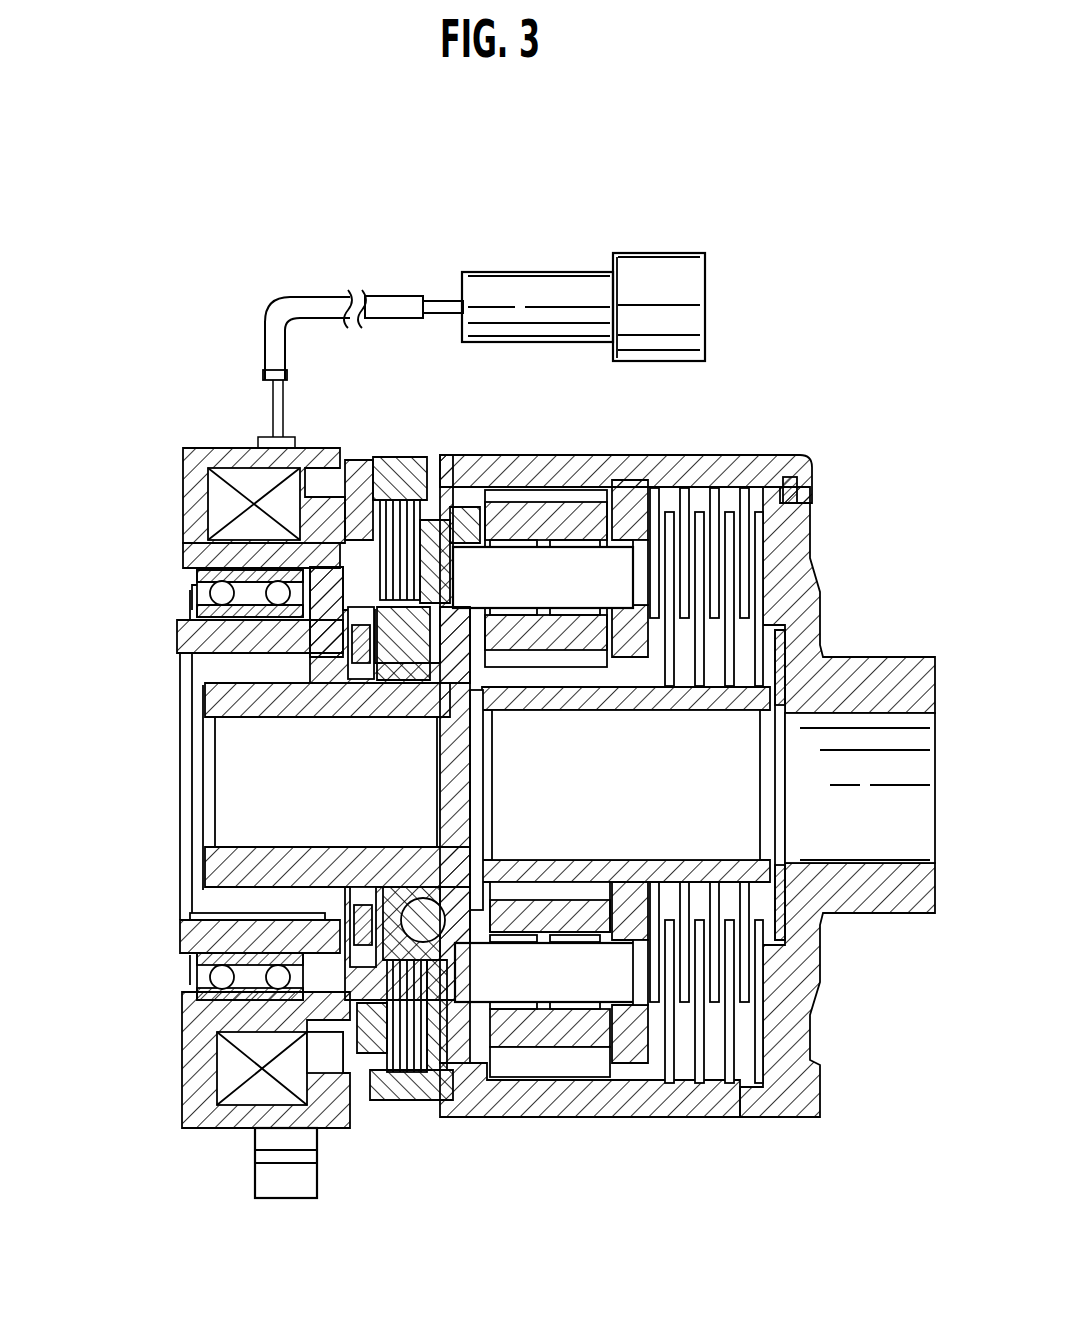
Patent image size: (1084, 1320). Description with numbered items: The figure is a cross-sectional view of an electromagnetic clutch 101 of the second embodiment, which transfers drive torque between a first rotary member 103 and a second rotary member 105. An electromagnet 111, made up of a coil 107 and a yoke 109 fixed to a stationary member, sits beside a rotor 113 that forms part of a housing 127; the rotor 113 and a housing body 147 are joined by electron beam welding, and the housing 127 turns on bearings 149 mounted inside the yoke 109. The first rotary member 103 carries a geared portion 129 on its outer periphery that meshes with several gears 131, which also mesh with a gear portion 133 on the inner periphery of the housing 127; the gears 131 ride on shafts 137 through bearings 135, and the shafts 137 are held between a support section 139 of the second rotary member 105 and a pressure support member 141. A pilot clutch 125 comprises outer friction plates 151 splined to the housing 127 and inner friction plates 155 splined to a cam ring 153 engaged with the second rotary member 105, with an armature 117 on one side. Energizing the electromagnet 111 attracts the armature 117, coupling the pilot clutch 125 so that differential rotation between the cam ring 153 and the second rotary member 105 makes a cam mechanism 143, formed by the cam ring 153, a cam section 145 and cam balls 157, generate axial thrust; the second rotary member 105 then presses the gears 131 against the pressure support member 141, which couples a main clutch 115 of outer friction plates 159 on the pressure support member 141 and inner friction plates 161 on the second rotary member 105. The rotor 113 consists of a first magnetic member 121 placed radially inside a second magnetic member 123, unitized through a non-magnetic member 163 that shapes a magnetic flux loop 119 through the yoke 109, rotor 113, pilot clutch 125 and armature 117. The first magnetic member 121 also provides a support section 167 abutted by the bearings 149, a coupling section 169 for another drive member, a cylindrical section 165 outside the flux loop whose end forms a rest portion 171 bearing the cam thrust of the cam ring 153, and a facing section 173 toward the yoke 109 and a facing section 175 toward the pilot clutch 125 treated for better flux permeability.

The electromagnetic clutch 101 is at (549, 212).
The first rotary member 103 is at (795, 655).
The second rotary member 105 is at (190, 709).
The coil 107 is at (222, 495).
The yoke 109 is at (210, 456).
The electromagnet 111 is at (236, 442).
The rotor 113 is at (366, 452).
The main clutch 115 is at (713, 1098).
The armature 117 is at (470, 540).
The magnetic flux loop 119 is at (245, 1130).
The first magnetic member 121 is at (228, 632).
The second magnetic member 123 is at (352, 470).
The pilot clutch 125 is at (435, 478).
The housing 127 is at (732, 436).
The geared portion 129 is at (576, 888).
The gears 131 is at (598, 908).
The gear portion 133 is at (578, 492).
The bearings 135 is at (580, 1012).
The shafts 137 is at (578, 980).
The support section 139 is at (516, 520).
The pressure support member 141 is at (658, 508).
The cam mechanism 143 is at (416, 878).
The cam section 145 is at (483, 867).
The housing body 147 is at (755, 465).
The bearings 149 is at (227, 597).
The outer friction plates 151 is at (398, 498).
The cam ring 153 is at (362, 655).
The inner friction plates 155 is at (420, 655).
The cam balls 157 is at (395, 925).
The outer friction plates 159 is at (648, 1075).
The inner friction plates 161 is at (728, 700).
The non-magnetic member 163 is at (368, 1030).
The cylindrical section 165 is at (197, 933).
The support section 167 is at (200, 948).
The coupling section 169 is at (207, 914).
The rest portion 171 is at (368, 920).
The facing section 173 is at (205, 666).
The facing section 175 is at (335, 625).